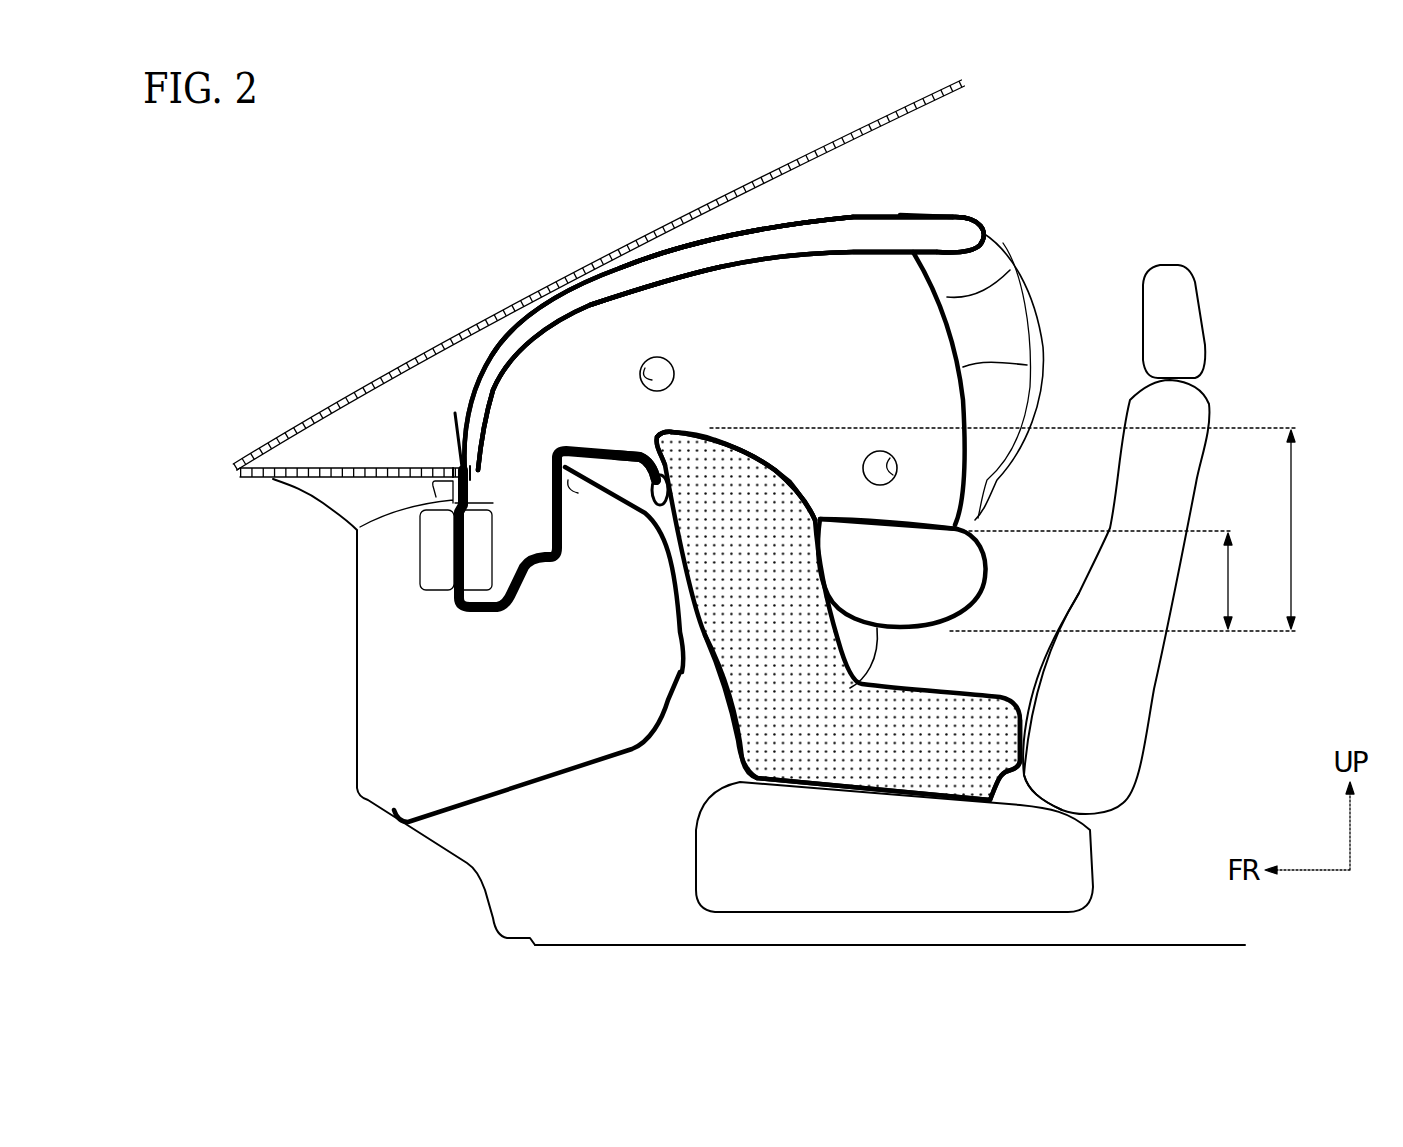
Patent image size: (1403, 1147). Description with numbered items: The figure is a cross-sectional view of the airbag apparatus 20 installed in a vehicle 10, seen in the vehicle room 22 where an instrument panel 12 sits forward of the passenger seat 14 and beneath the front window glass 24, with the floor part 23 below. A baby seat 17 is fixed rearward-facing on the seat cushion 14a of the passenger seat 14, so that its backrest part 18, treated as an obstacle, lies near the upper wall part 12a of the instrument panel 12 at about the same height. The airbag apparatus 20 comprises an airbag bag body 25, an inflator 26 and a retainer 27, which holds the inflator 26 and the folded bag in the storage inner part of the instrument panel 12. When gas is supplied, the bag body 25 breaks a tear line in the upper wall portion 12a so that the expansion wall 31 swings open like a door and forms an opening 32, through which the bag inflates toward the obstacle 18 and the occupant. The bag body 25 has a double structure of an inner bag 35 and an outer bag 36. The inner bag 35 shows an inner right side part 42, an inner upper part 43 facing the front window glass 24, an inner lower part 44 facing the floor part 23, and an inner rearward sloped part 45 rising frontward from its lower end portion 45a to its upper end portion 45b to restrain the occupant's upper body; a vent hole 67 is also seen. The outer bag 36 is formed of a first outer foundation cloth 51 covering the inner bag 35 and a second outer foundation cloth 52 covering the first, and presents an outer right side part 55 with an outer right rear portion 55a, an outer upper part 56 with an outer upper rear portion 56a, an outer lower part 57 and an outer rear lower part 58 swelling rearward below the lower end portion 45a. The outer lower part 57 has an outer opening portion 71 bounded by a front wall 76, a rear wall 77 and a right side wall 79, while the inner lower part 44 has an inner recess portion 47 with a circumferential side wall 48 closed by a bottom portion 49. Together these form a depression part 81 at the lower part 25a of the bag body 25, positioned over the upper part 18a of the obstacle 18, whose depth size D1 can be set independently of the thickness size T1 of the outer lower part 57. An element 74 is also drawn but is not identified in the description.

The vehicle 10 is at (505, 185).
The instrument panel 12 is at (379, 625).
The upper wall part 12a is at (383, 465).
The passenger seat 14 is at (992, 589).
The seat cushion 14a is at (1005, 877).
The baby seat 17 is at (1022, 707).
The backrest part 18 is at (755, 700).
The upper part of the obstacle 18a is at (683, 628).
The airbag apparatus 20 is at (483, 352).
The vehicle room 22 is at (1164, 222).
The floor part 23 is at (643, 943).
The front window glass 24 is at (520, 303).
The airbag bag body 25 is at (771, 184).
The lower part of the airbag bag body 25a is at (777, 697).
The inflator 26 is at (437, 553).
The retainer 27 is at (440, 503).
The expansion wall 31 is at (453, 433).
The opening 32 is at (487, 463).
The inner bag 35 is at (873, 243).
The outer bag 36 is at (753, 227).
The inner right side part 42 is at (790, 303).
The inner upper part 43 is at (817, 253).
The inner lower part 44 is at (598, 462).
The inner rearward sloped part 45 is at (1013, 360).
The lower end portion 45a is at (978, 518).
The upper end portion 45b is at (935, 215).
The inner recess portion 47 is at (737, 477).
The circumferential side wall 48 is at (773, 500).
The bottom portion 49 is at (693, 452).
The first outer foundation cloth 51 is at (603, 300).
The second outer foundation cloth 52 is at (663, 243).
The outer right side part 55 is at (1007, 270).
The outer right rear portion 55a is at (1007, 310).
The outer upper part 56 is at (720, 230).
The outer upper rear portion 56a is at (975, 222).
The outer lower part 57 is at (925, 643).
The outer rear lower part 58 is at (986, 585).
The vent hole 67 is at (640, 375).
The outer opening portion 71 is at (793, 560).
The rear surface 74 is at (966, 345).
The front wall 76 is at (735, 680).
The rear wall 77 is at (635, 467).
The right side wall 79 is at (672, 527).
The depression part 81 is at (838, 564).
The depth size D1 is at (1291, 530).
The thickness size T1 is at (1228, 578).